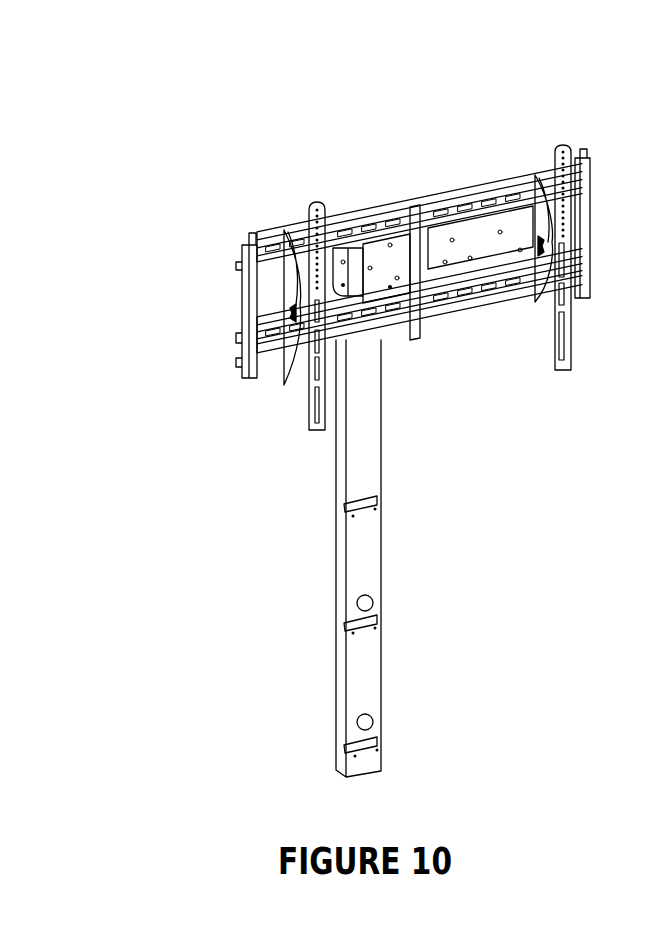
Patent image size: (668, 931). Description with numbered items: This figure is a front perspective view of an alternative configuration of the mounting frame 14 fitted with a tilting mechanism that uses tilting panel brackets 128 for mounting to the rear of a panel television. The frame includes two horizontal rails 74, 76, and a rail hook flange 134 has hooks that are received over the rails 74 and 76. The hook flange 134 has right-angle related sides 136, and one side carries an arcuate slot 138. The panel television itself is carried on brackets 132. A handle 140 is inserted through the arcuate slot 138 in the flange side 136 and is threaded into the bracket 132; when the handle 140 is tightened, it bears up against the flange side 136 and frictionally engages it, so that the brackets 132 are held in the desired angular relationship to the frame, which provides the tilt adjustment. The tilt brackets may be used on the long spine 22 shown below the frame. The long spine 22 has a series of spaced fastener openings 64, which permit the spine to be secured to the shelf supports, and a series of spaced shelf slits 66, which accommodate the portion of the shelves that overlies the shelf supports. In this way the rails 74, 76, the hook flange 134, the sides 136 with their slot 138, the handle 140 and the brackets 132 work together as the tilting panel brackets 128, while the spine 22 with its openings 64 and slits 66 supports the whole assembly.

The display mount assembly 14 is at (592, 164).
The long spine 22 is at (367, 455).
The fastener openings 64 is at (375, 508).
The shelf slits 66 is at (378, 732).
The rail 74 is at (400, 203).
The rail 76 is at (428, 340).
The tilting panel brackets 128 is at (566, 330).
The bracket 132 is at (558, 345).
The rail hook flange 134 is at (306, 208).
The sides 136 is at (538, 213).
The arcuate slot 138 is at (540, 249).
The handle 140 is at (290, 320).